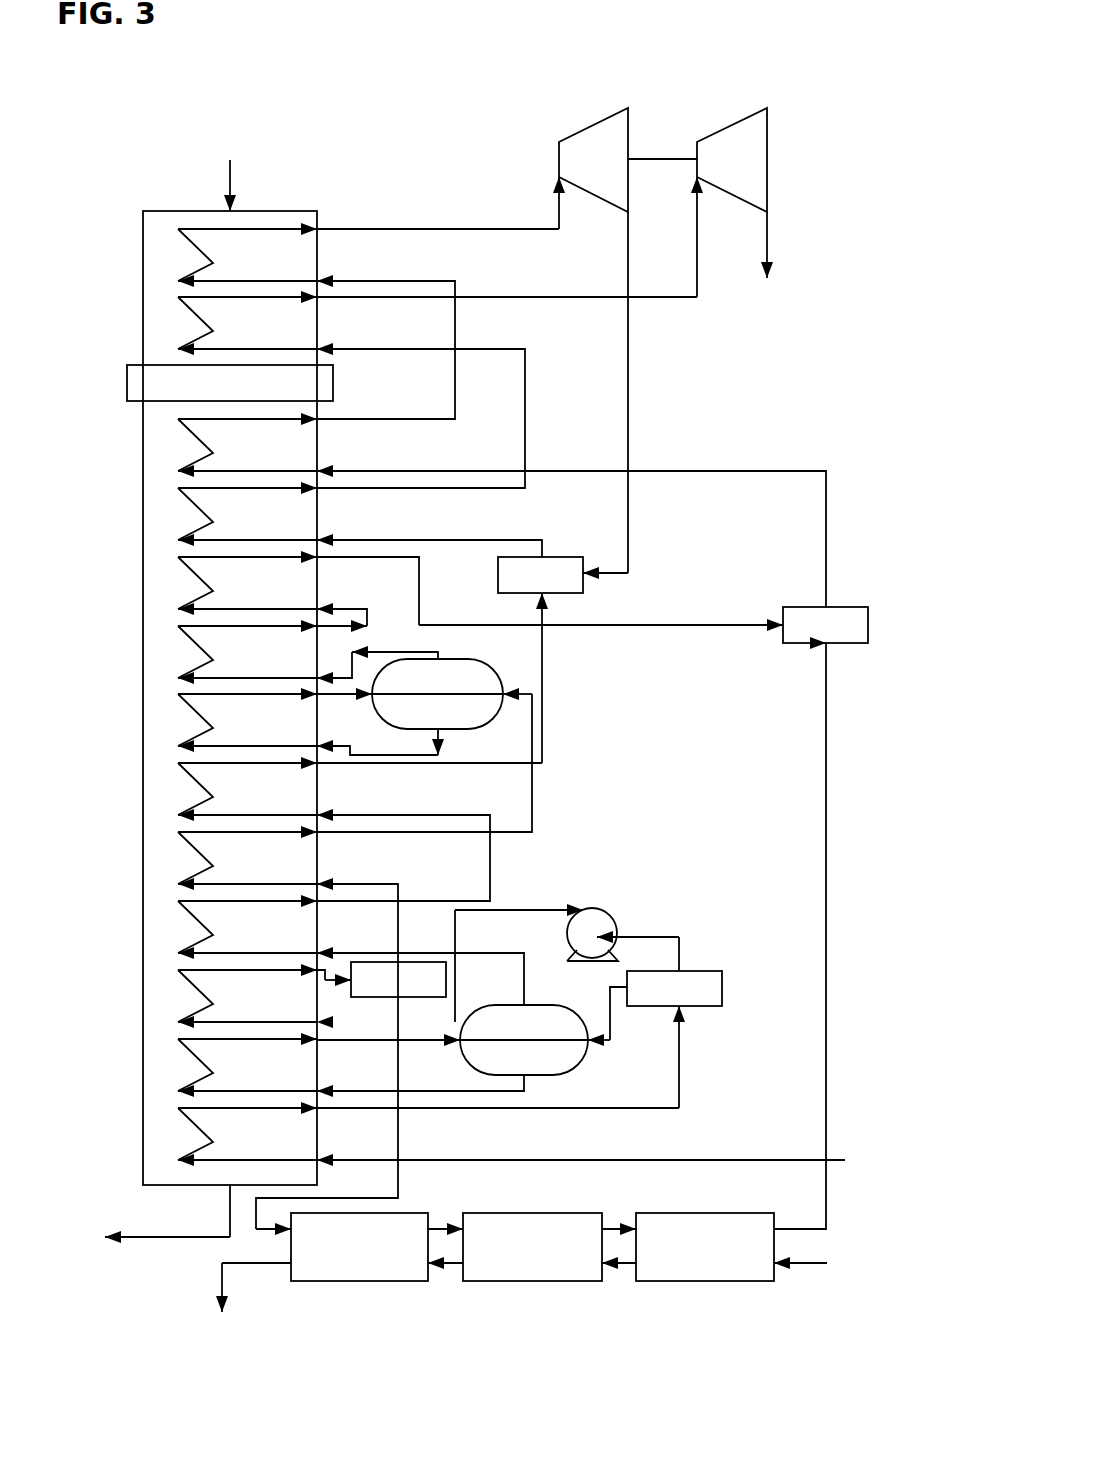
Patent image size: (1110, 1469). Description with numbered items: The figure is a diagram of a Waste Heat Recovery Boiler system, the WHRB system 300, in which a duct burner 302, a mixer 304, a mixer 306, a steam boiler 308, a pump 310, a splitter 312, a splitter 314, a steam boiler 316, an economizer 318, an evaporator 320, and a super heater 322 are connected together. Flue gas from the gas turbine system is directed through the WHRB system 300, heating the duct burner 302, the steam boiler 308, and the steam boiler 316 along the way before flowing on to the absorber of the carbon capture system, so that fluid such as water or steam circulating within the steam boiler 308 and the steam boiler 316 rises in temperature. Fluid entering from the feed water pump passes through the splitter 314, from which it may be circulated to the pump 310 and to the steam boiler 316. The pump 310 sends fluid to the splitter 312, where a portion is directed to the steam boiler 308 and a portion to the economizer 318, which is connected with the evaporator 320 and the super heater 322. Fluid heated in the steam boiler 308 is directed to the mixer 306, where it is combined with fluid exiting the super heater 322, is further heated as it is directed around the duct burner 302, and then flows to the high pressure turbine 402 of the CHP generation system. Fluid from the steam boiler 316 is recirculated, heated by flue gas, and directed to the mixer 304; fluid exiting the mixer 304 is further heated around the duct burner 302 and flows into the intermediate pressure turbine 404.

The WHRB system 300 is at (257, 80).
The duct burner 302 is at (127, 382).
The mixer 304 is at (556, 557).
The mixer 306 is at (800, 643).
The steam boiler 308 is at (503, 675).
The pump 310 is at (600, 910).
The splitter 312 is at (418, 962).
The splitter 314 is at (722, 990).
The steam boiler 316 is at (585, 1048).
The economizer 318 is at (360, 1281).
The evaporator 320 is at (532, 1281).
The super heater 322 is at (705, 1281).
The high pressure turbine 402 is at (568, 140).
The intermediate pressure turbine 404 is at (708, 140).